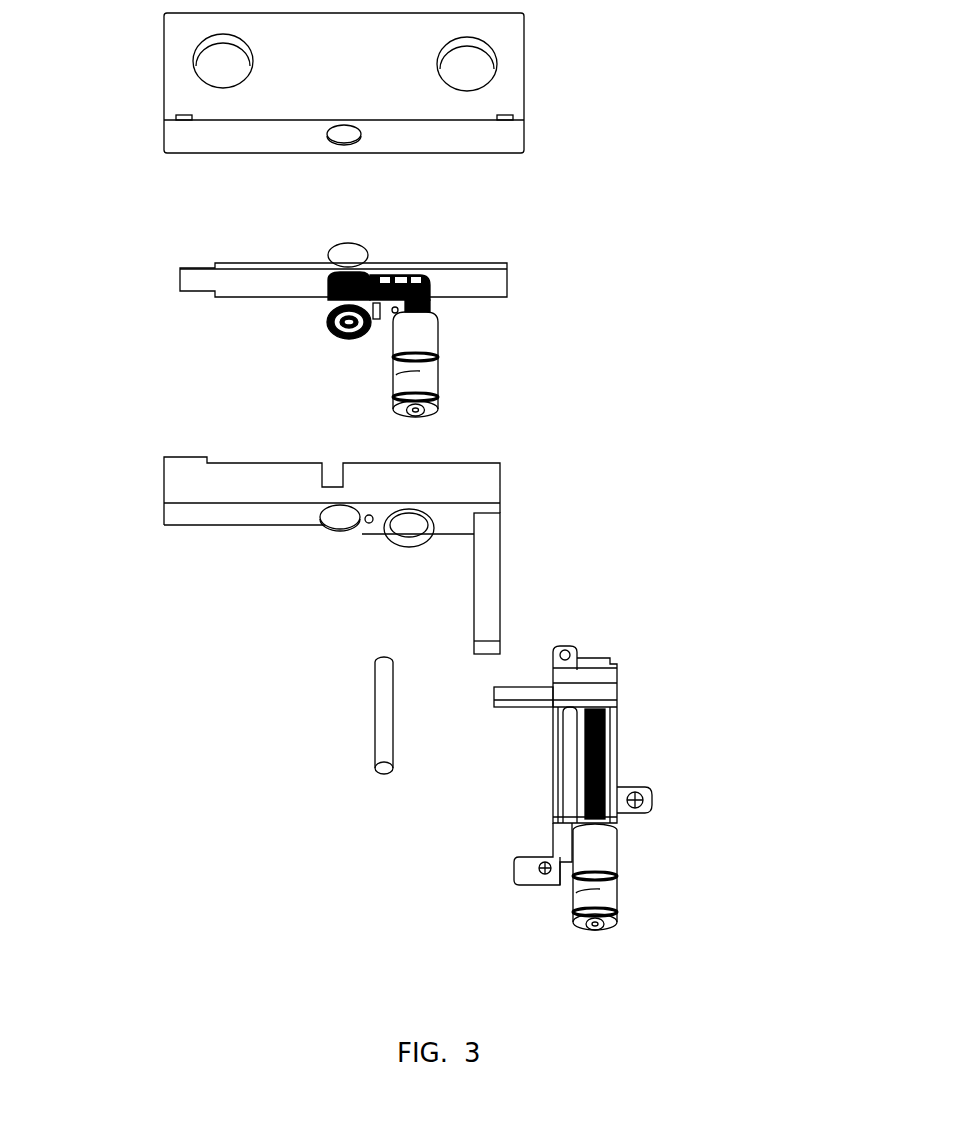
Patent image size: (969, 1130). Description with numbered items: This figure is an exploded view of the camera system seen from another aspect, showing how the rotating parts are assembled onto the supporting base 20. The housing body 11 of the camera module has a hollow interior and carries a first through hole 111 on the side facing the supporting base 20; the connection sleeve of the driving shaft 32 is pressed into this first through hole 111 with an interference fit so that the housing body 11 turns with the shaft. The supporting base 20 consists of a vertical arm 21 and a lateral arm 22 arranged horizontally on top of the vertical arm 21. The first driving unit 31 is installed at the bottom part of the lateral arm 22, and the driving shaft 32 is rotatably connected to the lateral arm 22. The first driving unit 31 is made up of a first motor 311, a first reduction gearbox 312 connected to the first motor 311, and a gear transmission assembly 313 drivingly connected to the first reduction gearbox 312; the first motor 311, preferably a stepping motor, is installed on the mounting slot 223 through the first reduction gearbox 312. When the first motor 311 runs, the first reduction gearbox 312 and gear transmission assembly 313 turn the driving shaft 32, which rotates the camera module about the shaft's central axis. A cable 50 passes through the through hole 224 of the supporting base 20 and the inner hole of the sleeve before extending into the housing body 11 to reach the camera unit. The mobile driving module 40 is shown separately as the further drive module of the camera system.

The housing body 11 is at (501, 110).
The first through hole 111 is at (330, 140).
The supporting base 20 is at (422, 602).
The vertical arm 21 is at (487, 553).
The lateral arm 22 is at (487, 466).
The mounting slot 223 is at (407, 537).
The through hole 224 is at (337, 521).
The first driving unit 31 is at (452, 301).
The first motor 311 is at (427, 384).
The first reduction gearbox 312 is at (432, 343).
The gear transmission assembly 313 is at (432, 292).
The driving shaft 32 is at (355, 250).
The mobile driving module 40 is at (606, 745).
The cable 50 is at (383, 750).